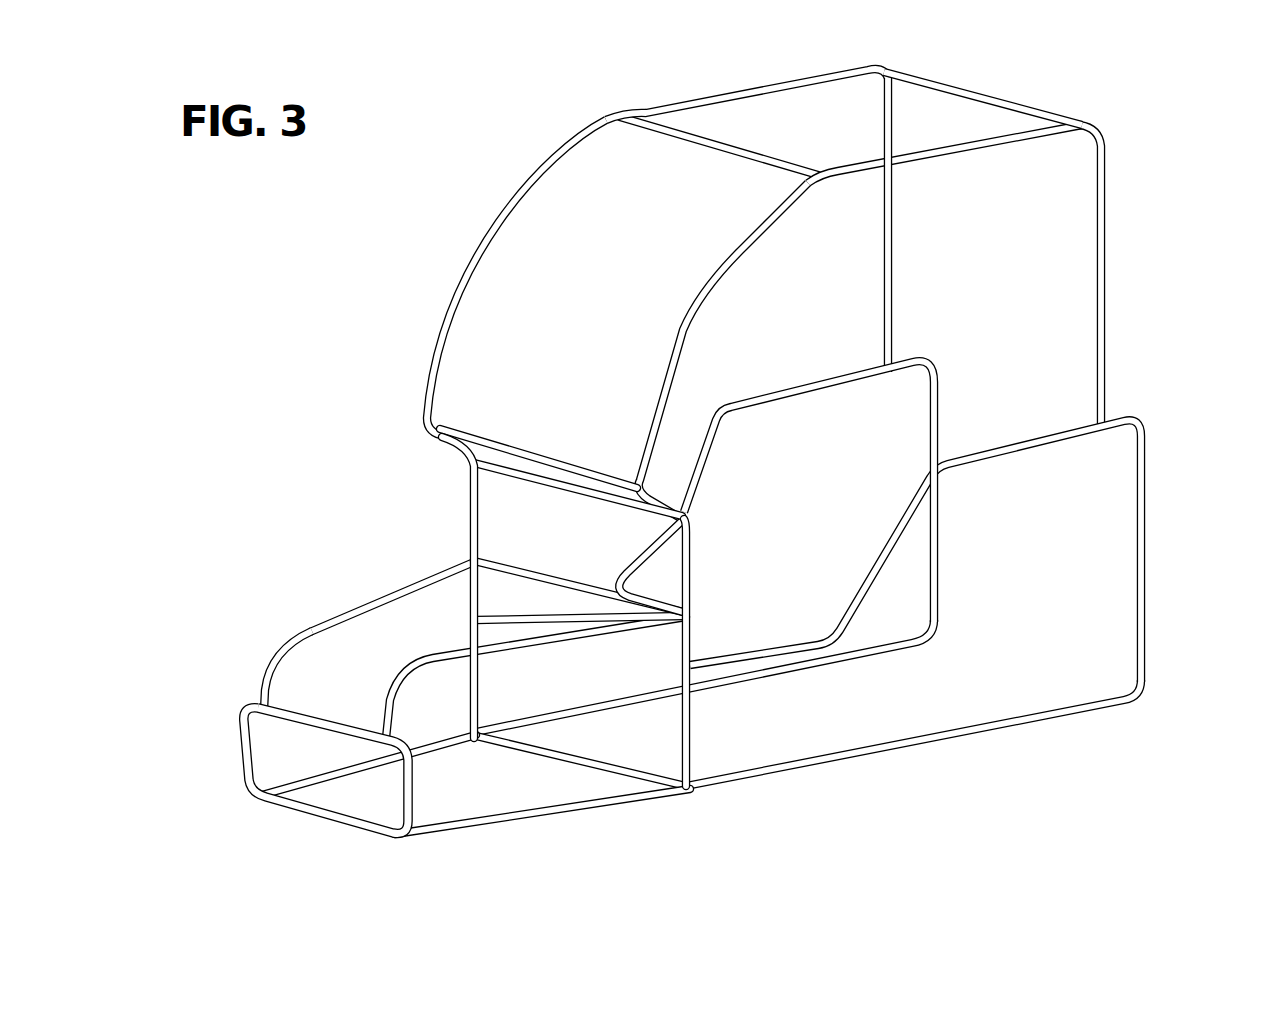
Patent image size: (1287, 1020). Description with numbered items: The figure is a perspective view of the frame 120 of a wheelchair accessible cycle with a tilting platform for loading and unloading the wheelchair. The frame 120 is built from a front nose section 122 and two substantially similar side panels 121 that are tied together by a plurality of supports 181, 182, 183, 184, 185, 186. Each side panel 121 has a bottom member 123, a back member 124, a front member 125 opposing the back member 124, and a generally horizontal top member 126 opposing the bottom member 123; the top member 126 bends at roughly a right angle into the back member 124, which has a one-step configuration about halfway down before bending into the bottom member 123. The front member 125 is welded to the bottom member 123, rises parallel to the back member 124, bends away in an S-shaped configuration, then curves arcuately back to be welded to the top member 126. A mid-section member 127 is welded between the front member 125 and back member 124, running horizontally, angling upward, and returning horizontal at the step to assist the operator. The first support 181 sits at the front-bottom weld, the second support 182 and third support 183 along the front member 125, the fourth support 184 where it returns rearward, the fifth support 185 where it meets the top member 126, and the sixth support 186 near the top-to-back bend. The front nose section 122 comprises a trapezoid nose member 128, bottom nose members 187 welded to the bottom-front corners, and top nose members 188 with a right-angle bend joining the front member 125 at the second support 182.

The frame 120 is at (1172, 104).
The side panels 121 is at (493, 228).
The front nose section 122 is at (358, 598).
The bottom member 123 is at (905, 646).
The back member 124 is at (890, 246).
The front member 125 is at (468, 636).
The top member 126 is at (742, 88).
The mid-section member 127 is at (790, 393).
The trapezoid nose member 128 is at (238, 738).
The first support 181 is at (592, 762).
The second support 182 is at (560, 580).
The third support 183 is at (578, 490).
The fourth support 184 is at (530, 452).
The fifth support 185 is at (706, 142).
The sixth support 186 is at (960, 100).
The bottom nose members 187 is at (564, 808).
The top nose members 188 is at (282, 656).